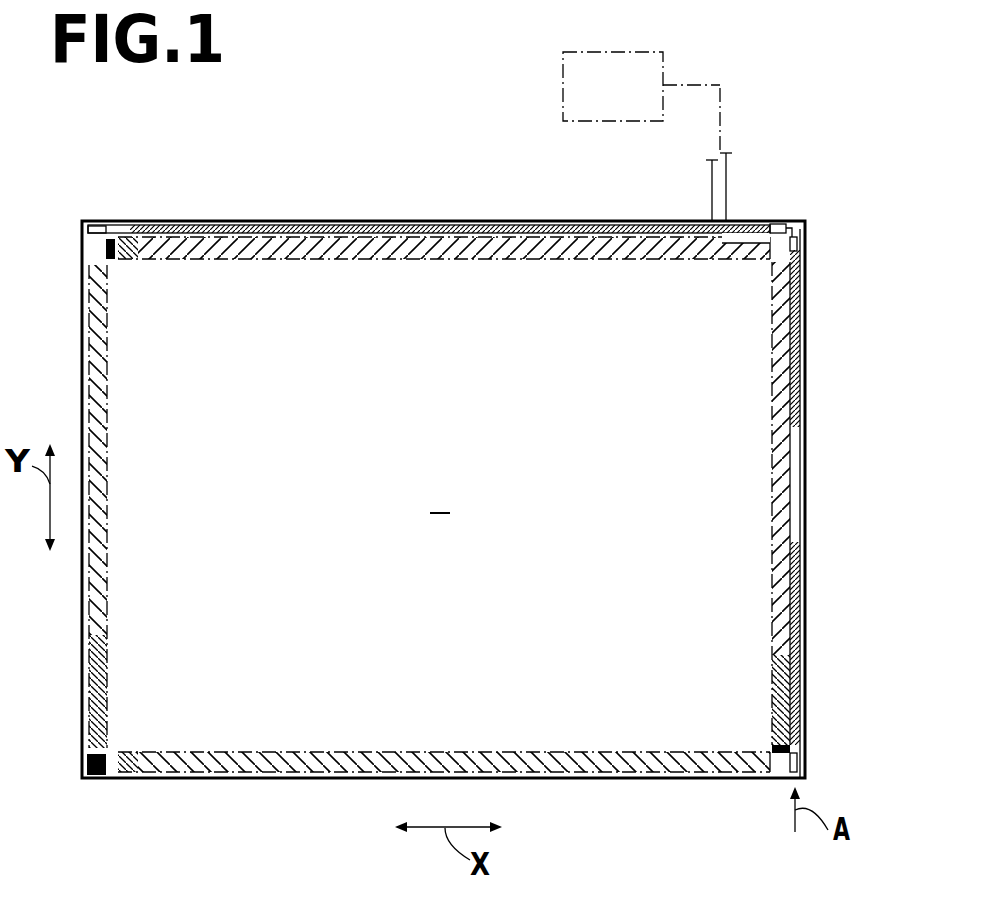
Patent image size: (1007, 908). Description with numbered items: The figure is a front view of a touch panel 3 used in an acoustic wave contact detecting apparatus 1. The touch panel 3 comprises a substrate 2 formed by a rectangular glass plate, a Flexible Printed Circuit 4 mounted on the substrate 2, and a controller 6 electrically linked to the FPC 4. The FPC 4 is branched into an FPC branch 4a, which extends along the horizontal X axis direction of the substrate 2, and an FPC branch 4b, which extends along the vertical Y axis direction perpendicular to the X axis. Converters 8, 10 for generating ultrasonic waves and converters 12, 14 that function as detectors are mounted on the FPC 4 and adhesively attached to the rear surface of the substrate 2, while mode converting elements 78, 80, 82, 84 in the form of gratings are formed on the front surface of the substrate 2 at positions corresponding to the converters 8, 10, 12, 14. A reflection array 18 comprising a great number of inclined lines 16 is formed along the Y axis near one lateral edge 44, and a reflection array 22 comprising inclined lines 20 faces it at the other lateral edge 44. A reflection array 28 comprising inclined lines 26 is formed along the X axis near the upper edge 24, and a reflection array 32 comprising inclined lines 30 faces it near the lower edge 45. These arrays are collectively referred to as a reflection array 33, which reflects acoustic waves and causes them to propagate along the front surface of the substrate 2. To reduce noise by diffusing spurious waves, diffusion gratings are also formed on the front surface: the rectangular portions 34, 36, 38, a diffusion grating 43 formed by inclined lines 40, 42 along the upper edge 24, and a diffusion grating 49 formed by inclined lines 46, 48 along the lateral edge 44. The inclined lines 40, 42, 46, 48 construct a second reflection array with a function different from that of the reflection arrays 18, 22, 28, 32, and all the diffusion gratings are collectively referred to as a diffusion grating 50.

The apparatus 1 is at (417, 404).
The substrate 2 is at (440, 497).
The touch panel 3 is at (72, 385).
The Flexible Printed Circuit 4 is at (745, 168).
The FPC branch 4a is at (450, 225).
The FPC branch 4b is at (800, 490).
The controller 6 is at (664, 75).
The converter 8 is at (136, 195).
The mode converting element 78 is at (93, 225).
The converter 10 is at (844, 747).
The mode converting element 80 is at (843, 753).
The converter 12 is at (829, 198).
The mode converting element 82 is at (778, 224).
The converter 14 is at (844, 227).
The mode converting element 84 is at (798, 248).
The inclined lines 16 is at (100, 410).
The reflection array 18 is at (176, 506).
The inclined lines 20 is at (736, 503).
The reflection array 22 is at (706, 503).
The upper edge 24 is at (444, 280).
The inclined lines 26 is at (410, 319).
The reflection array 28 is at (410, 319).
The inclined lines 30 is at (458, 673).
The reflection array 32 is at (444, 693).
The reflection array 33 is at (764, 523).
The diffusion grating 34 is at (104, 250).
The diffusion grating 36 is at (95, 776).
The diffusion grating 38 is at (778, 753).
The inclined lines 40 is at (429, 189).
The inclined lines 42 is at (628, 227).
The diffusion grating 43 is at (556, 213).
The lateral edge 44 is at (82, 656).
The lower edge 45 is at (233, 779).
The inclined lines 46 is at (797, 372).
The inclined lines 48 is at (797, 613).
The diffusion grating 49 is at (806, 565).
The diffusion grating 50 is at (80, 775).